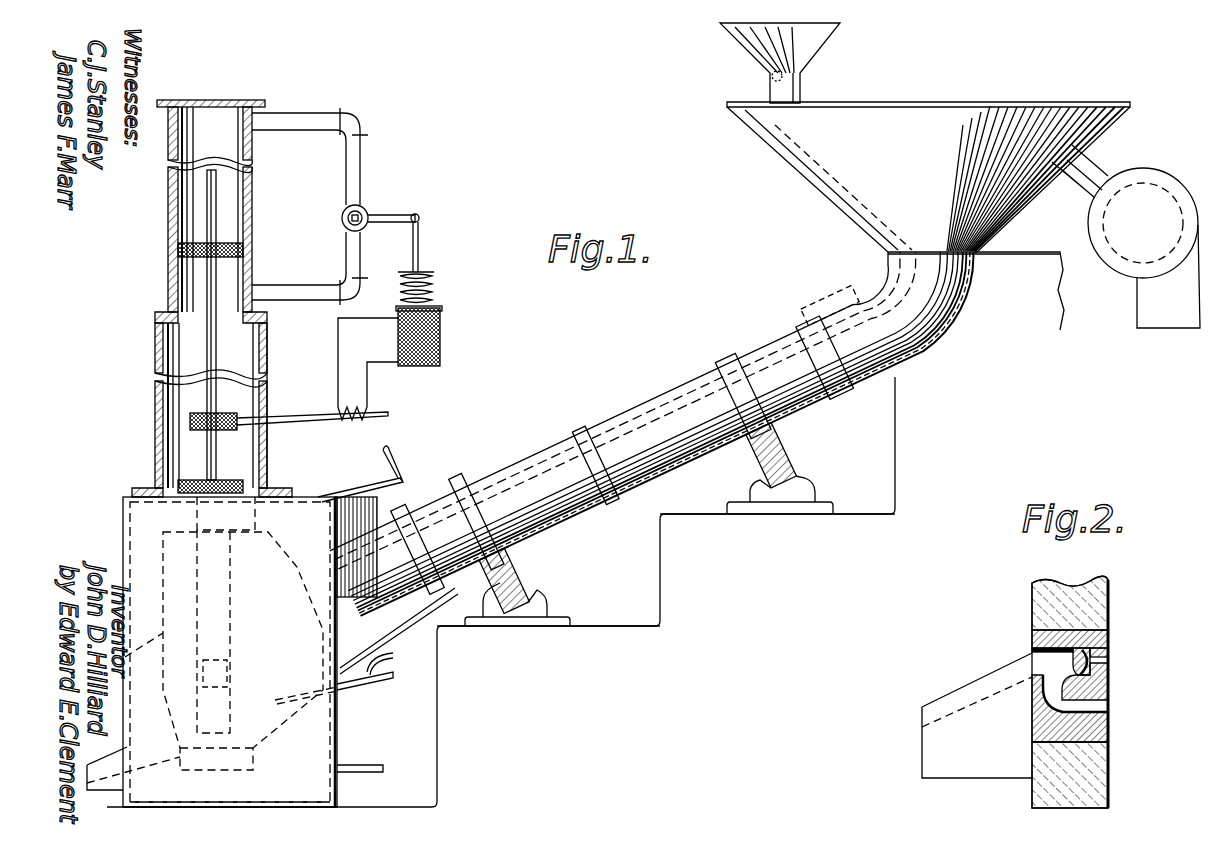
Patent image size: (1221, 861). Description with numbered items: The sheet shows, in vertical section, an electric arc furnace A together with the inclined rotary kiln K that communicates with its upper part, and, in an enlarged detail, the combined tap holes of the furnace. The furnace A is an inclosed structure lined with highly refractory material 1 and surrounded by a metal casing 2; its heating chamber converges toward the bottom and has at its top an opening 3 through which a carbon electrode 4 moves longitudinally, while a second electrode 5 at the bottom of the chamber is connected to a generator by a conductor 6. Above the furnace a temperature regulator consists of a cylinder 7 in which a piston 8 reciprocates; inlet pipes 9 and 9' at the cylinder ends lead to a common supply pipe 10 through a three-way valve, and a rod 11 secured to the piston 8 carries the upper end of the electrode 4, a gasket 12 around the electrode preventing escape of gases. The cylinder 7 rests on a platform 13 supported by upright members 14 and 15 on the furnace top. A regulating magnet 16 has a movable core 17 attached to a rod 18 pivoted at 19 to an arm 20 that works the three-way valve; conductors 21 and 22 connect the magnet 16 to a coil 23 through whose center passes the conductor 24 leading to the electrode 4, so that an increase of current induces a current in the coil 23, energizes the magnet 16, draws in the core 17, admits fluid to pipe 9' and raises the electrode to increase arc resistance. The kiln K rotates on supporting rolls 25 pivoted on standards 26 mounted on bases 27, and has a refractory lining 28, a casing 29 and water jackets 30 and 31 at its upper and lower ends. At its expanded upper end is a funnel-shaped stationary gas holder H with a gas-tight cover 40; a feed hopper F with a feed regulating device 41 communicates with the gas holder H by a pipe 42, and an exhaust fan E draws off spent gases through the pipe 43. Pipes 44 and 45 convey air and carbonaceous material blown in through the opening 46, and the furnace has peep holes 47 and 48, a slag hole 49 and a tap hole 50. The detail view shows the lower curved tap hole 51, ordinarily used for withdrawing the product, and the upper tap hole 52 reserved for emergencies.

In FIG. 1, the highly refractory material 1 is at (280, 790).
In FIG. 1, the metal casing 2 is at (170, 803).
In FIG. 1, the opening 3 is at (200, 532).
In FIG. 1, the electrode 4 is at (197, 568).
In FIG. 1, the second electrode 5 is at (205, 760).
In FIG. 1, the conductor 6 is at (357, 772).
In FIG. 1, the cylinder 7 is at (168, 220).
In FIG. 1, the piston 8 is at (243, 250).
In FIG. 1, the inlet pipe 9 is at (310, 143).
In FIG. 1, the inlet pipe 9' is at (310, 268).
In FIG. 1, the supply pipe 10 is at (345, 212).
In FIG. 1, the rod 11 is at (178, 283).
In FIG. 1, the gasket 12 is at (177, 483).
In FIG. 1, the platform 13 is at (157, 316).
In FIG. 1, the upright member 14 is at (155, 395).
In FIG. 1, the upright member 15 is at (267, 393).
In FIG. 1, the regulating magnet 16 is at (432, 300).
In FIG. 1, the movable core 17 is at (434, 283).
In FIG. 1, the rod 18 is at (420, 240).
In FIG. 1, the pivot 19 is at (420, 215).
In FIG. 1, the arm 20 is at (398, 215).
In FIG. 1, the conductor 21 is at (367, 385).
In FIG. 1, the conductor 22 is at (338, 334).
In FIG. 1, the coil 23 is at (365, 418).
In FIG. 1, the conductor 24 is at (337, 424).
In FIG. 1, the supporting roll 25 is at (507, 572).
In FIG. 1, the standard 26 is at (537, 610).
In FIG. 1, the base 27 is at (666, 594).
In FIG. 1, the refractory lining 28 is at (760, 357).
In FIG. 1, the casing 29 is at (697, 372).
In FIG. 1, the water jacket 30 is at (828, 318).
In FIG. 1, the water jacket 31 is at (395, 482).
In FIG. 1, the gas tight cover 40 is at (970, 105).
In FIG. 1, the feed regulating device 41 is at (768, 80).
In FIG. 1, the pipe 42 is at (800, 80).
In FIG. 1, the pipe 43 is at (1105, 160).
In FIG. 1, the pipe 44 is at (393, 656).
In FIG. 1, the pipe 45 is at (385, 680).
In FIG. 1, the opening 46 is at (303, 702).
In FIG. 1, the peep hole 47 is at (152, 648).
In FIG. 1, the peep hole 48 is at (255, 512).
In FIG. 1, the slag hole 49 is at (227, 670).
In FIG. 1, the tap hole 50 is at (152, 758).
In FIG. 2, the curved tap hole 51 is at (1108, 716).
In FIG. 2, the tap hole 52 is at (1095, 660).
In FIG. 1, the electric arc furnace A is at (198, 644).
In FIG. 1, the exhaust fan E is at (1165, 213).
In FIG. 1, the feed hopper F is at (832, 43).
In FIG. 1, the gas holder H is at (915, 145).
In FIG. 1, the kiln K is at (640, 396).